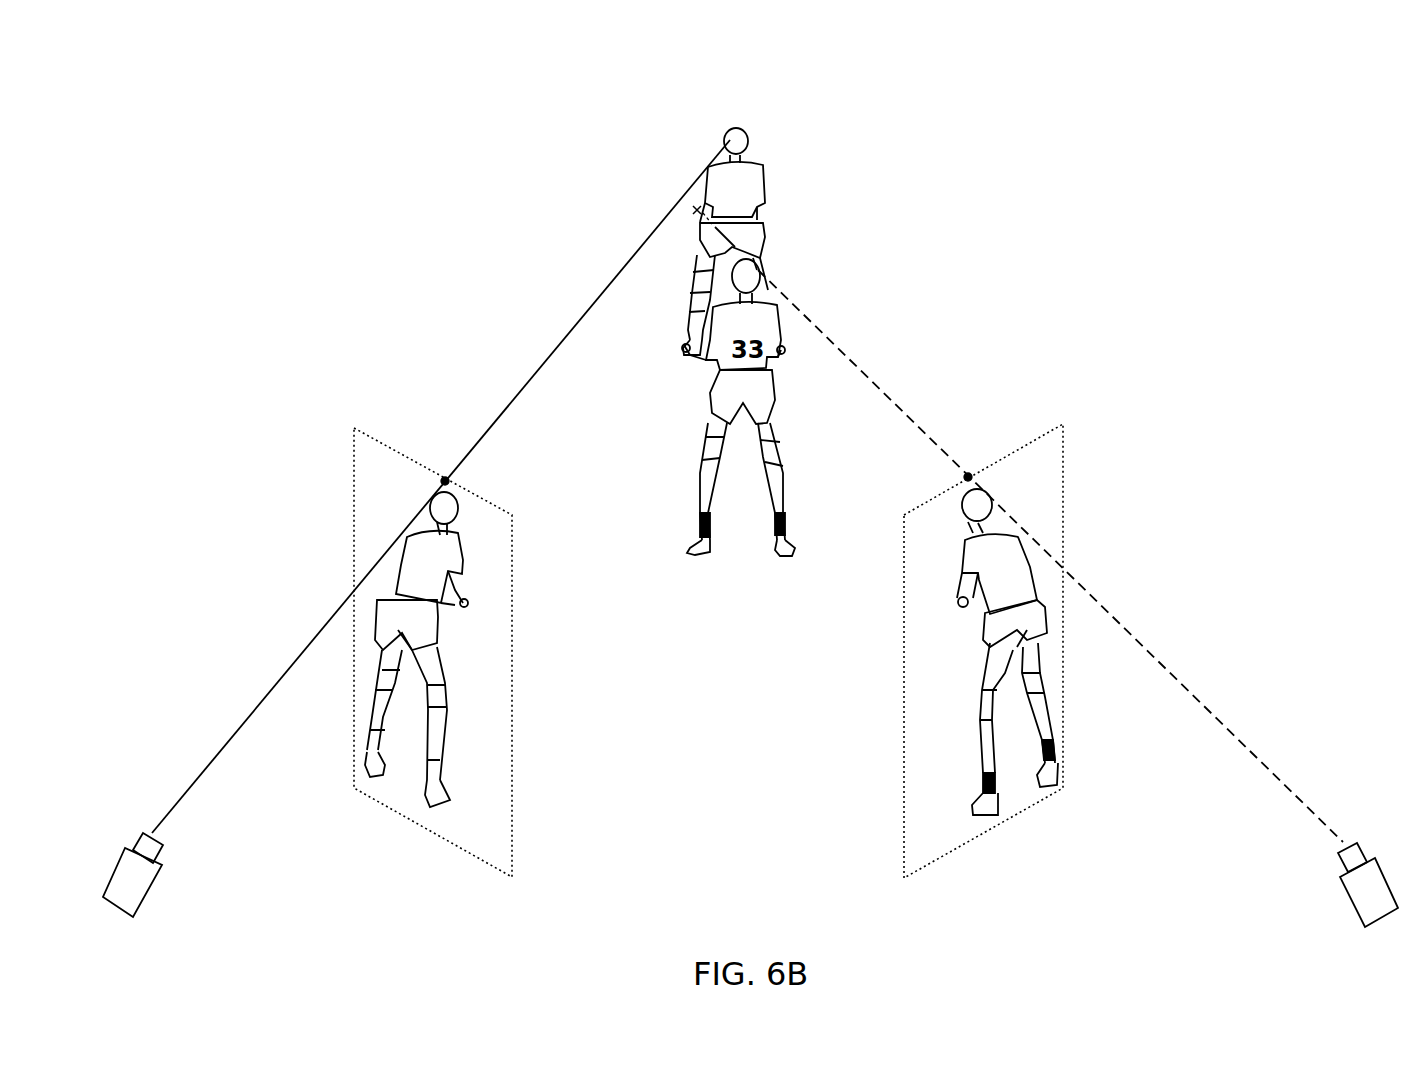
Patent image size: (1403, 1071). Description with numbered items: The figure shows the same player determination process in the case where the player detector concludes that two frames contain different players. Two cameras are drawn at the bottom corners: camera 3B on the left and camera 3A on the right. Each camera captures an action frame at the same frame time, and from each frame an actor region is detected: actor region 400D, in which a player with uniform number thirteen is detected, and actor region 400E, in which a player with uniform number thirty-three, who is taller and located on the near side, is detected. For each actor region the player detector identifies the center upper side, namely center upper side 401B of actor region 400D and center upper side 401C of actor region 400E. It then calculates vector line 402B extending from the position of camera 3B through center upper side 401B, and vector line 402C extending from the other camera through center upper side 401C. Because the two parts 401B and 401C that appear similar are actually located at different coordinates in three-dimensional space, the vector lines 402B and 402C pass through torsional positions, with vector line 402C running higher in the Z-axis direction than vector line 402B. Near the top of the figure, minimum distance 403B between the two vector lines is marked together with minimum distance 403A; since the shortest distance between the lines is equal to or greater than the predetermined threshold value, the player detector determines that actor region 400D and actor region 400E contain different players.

The camera 3A is at (1350, 900).
The camera 3B is at (152, 895).
The actor region 400D is at (415, 823).
The actor region 400E is at (990, 830).
The center upper side 401B is at (444, 478).
The center upper side 401C is at (969, 474).
The vector line 402B is at (520, 386).
The vector line 402C is at (868, 378).
The minimum distance 403A is at (737, 128).
The minimum distance 403B is at (684, 203).